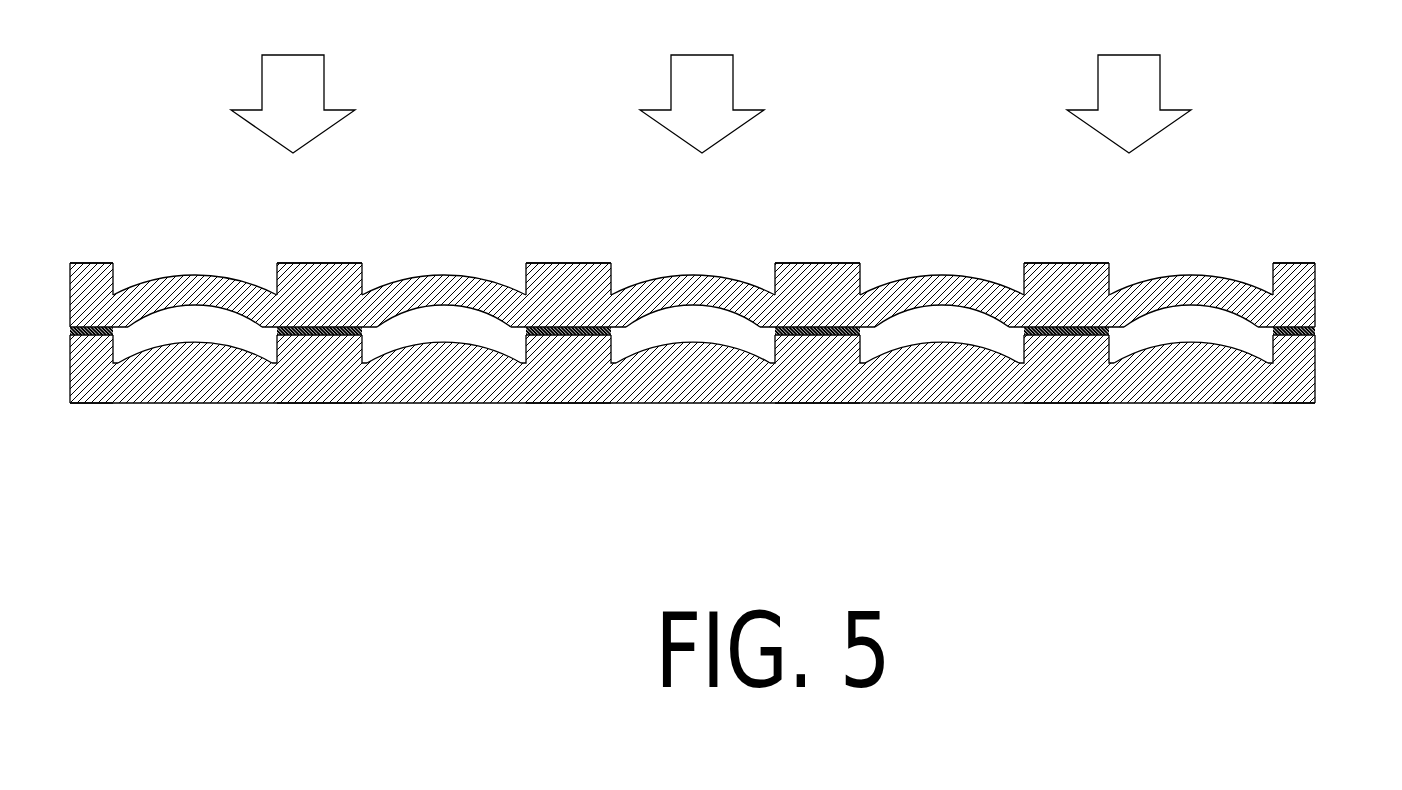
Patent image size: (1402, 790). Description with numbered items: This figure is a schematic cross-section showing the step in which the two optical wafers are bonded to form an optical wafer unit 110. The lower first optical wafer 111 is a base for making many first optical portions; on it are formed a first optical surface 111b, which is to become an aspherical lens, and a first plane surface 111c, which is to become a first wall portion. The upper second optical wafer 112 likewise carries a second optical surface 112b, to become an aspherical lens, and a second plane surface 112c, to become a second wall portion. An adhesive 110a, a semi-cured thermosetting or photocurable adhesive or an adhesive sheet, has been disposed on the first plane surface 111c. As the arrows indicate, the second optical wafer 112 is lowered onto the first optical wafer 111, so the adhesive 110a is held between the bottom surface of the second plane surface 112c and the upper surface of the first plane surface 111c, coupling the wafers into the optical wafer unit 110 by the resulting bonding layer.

The optical wafer unit 110 is at (1250, 157).
The adhesive 110a is at (93, 327).
The first optical wafer 111 is at (1317, 374).
The first optical surface 111b is at (195, 344).
The first plane surface 111c is at (100, 340).
The second optical wafer 112 is at (1317, 294).
The second optical surface 112b is at (194, 274).
The second plane surface 112c is at (92, 262).